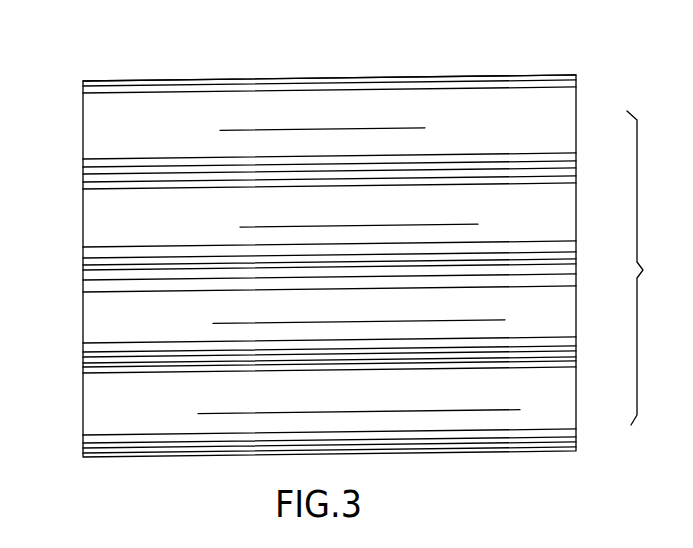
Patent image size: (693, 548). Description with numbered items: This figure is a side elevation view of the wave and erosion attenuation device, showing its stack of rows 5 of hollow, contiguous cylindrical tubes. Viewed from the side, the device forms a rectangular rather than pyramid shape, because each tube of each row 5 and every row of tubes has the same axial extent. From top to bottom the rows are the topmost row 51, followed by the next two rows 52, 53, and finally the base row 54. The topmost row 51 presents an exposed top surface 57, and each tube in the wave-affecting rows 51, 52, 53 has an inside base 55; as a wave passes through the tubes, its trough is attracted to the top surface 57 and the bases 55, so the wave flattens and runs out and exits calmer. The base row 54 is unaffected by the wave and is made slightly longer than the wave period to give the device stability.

The row 5 is at (371, 266).
The topmost row 51 is at (566, 112).
The second row 52 is at (567, 208).
The third row 53 is at (570, 310).
The base row 54 is at (573, 400).
The base of tube 55 is at (96, 177).
The exposed top surface 57 is at (247, 79).